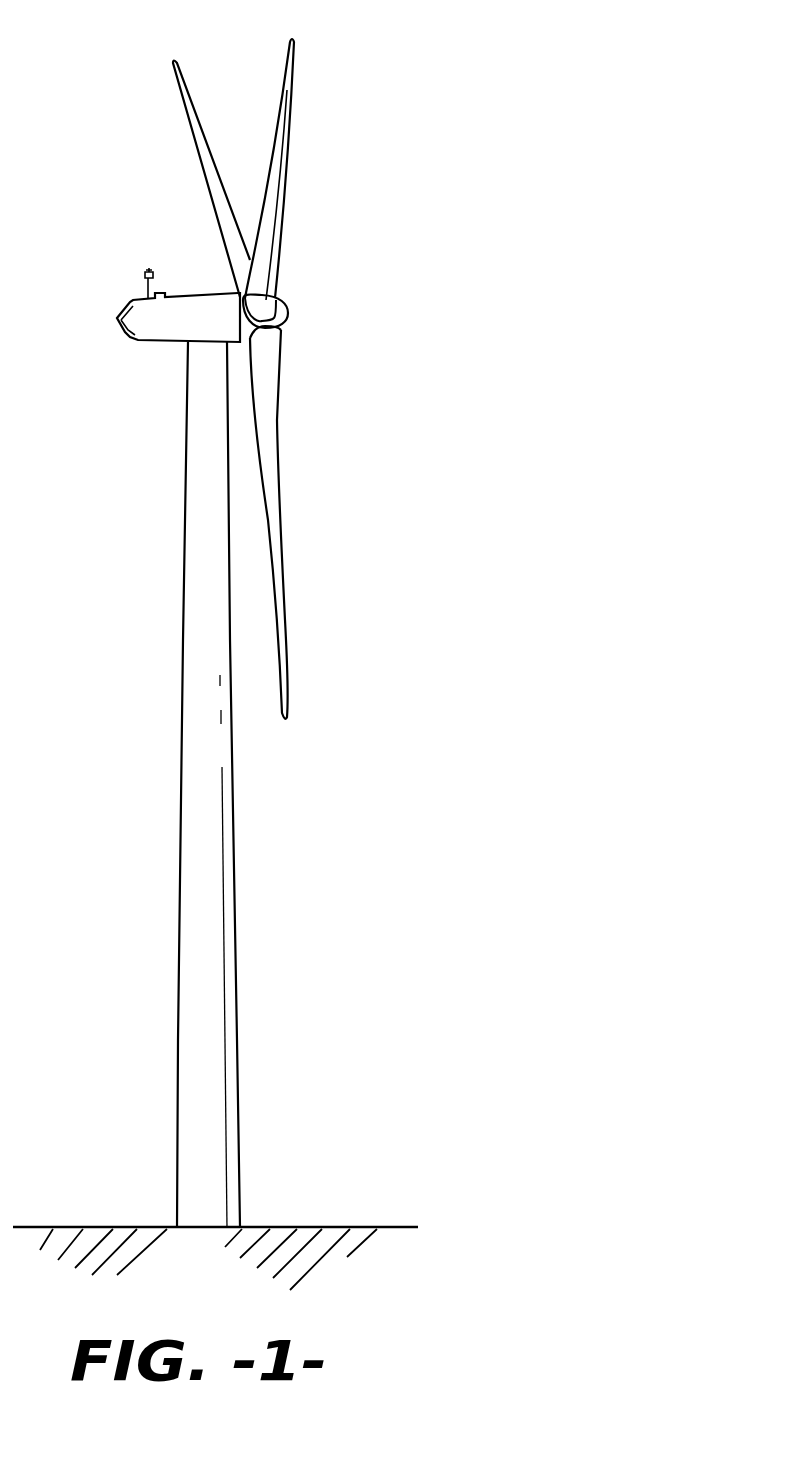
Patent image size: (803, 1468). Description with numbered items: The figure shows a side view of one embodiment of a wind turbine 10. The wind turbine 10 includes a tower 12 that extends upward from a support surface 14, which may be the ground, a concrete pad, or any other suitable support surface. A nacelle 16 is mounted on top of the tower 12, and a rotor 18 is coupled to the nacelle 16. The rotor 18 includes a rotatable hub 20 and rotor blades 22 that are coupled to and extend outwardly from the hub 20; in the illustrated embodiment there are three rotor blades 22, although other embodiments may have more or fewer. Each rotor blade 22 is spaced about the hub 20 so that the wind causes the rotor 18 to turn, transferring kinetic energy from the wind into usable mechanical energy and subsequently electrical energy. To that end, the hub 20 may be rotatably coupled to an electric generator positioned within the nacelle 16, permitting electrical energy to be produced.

The wind turbine 10 is at (393, 125).
The tower 12 is at (193, 905).
The support surface 14 is at (98, 1227).
The nacelle 16 is at (162, 343).
The rotor 18 is at (295, 288).
The rotatable hub 20 is at (288, 324).
The rotor blade 22 is at (282, 83).